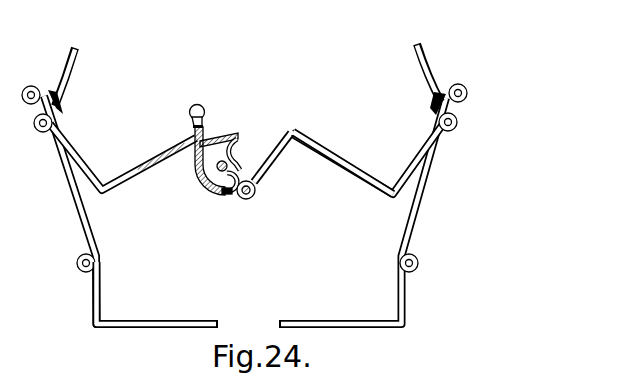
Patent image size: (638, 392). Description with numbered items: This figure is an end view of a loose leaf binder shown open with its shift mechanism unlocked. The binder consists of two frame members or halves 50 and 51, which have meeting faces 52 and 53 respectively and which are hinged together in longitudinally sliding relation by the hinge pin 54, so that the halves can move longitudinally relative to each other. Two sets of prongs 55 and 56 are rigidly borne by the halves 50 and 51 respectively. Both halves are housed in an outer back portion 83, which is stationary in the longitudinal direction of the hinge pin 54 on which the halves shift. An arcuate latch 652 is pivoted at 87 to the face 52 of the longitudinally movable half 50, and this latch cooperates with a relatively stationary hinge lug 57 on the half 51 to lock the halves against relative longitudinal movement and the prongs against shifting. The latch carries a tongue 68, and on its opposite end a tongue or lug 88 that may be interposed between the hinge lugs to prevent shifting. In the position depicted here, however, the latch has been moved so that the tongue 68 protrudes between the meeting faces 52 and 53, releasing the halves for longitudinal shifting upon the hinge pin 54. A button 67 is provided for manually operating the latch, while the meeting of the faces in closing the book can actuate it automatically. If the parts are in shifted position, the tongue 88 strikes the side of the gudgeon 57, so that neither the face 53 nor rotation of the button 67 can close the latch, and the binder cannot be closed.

The frame member or half 50 is at (79, 147).
The frame member or half 51 is at (408, 153).
The meeting face 52 is at (212, 138).
The meeting face 53 is at (273, 155).
The hinge pin 54 is at (256, 190).
The prongs 55 is at (69, 74).
The prongs 56 is at (422, 75).
The hinge lug 57 is at (250, 199).
The button 67 is at (189, 119).
The tongue 68 is at (229, 142).
The outer back portion 83 is at (90, 302).
The pivot 87 is at (217, 167).
The tongue or lug 88 is at (228, 193).
The arcuate latch 652 is at (195, 173).